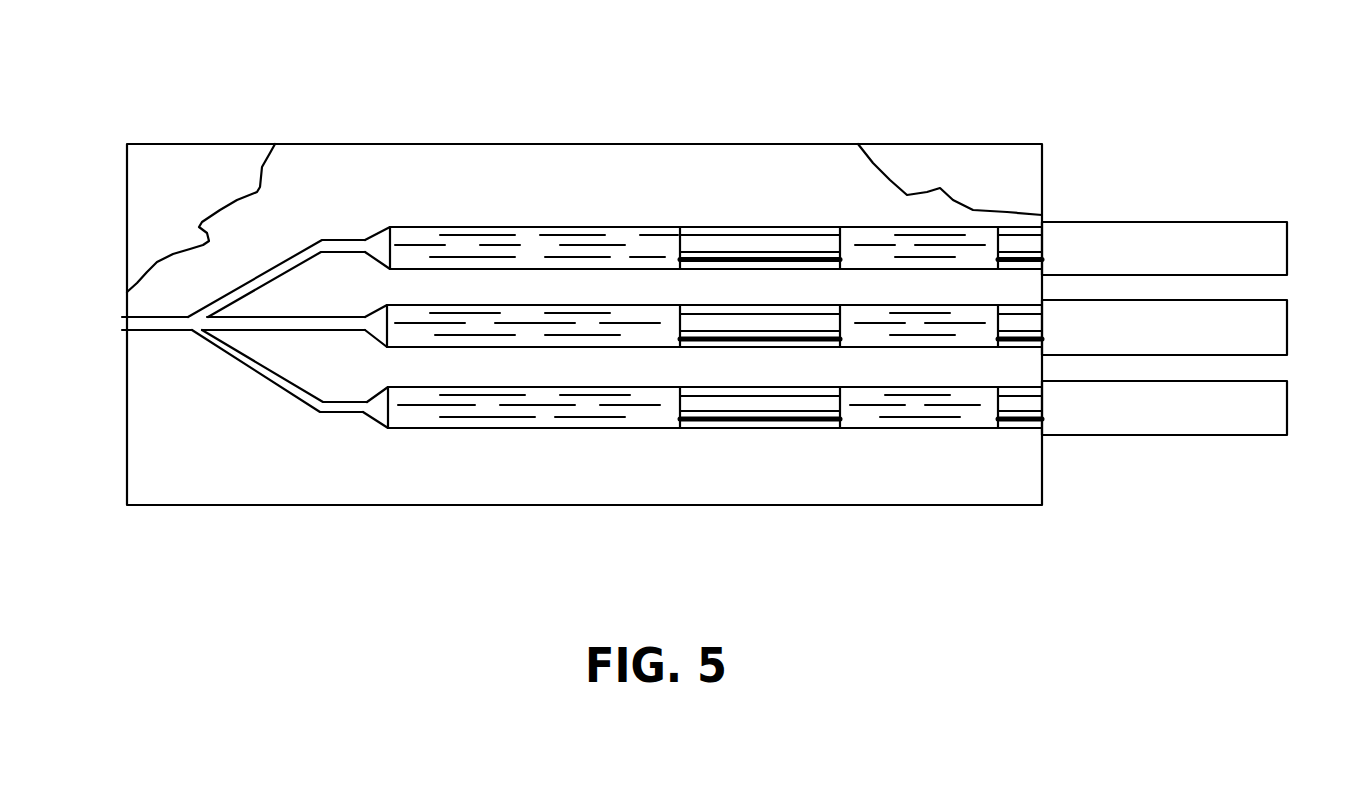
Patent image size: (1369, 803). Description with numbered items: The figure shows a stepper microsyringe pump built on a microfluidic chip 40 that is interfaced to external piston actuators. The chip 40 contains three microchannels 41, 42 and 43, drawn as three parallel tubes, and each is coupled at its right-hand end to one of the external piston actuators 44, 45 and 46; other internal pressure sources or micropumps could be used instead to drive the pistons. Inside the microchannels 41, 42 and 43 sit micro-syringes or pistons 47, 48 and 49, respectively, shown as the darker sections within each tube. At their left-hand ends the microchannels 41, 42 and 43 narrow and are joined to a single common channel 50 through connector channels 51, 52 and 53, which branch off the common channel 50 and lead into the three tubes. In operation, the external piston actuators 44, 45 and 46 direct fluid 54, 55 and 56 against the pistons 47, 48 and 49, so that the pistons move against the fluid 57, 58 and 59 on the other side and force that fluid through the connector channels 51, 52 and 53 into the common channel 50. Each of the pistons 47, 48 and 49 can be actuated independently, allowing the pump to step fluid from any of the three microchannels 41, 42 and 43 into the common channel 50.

The microfluidic chip 40 is at (562, 58).
The microchannel 41 is at (428, 428).
The microchannel 42 is at (413, 303).
The microchannel 43 is at (478, 227).
The external piston actuator 44 is at (1199, 407).
The external piston actuator 45 is at (1205, 325).
The external piston actuator 46 is at (1205, 242).
The piston 47 is at (753, 400).
The piston 48 is at (733, 325).
The piston 49 is at (790, 245).
The common channel 50 is at (155, 333).
The connector channel 51 is at (275, 387).
The connector channel 52 is at (258, 333).
The connector channel 53 is at (238, 292).
The fluid 54 is at (910, 415).
The fluid 55 is at (878, 325).
The fluid 56 is at (957, 245).
The fluid 57 is at (552, 408).
The fluid 58 is at (520, 325).
The fluid 59 is at (617, 245).